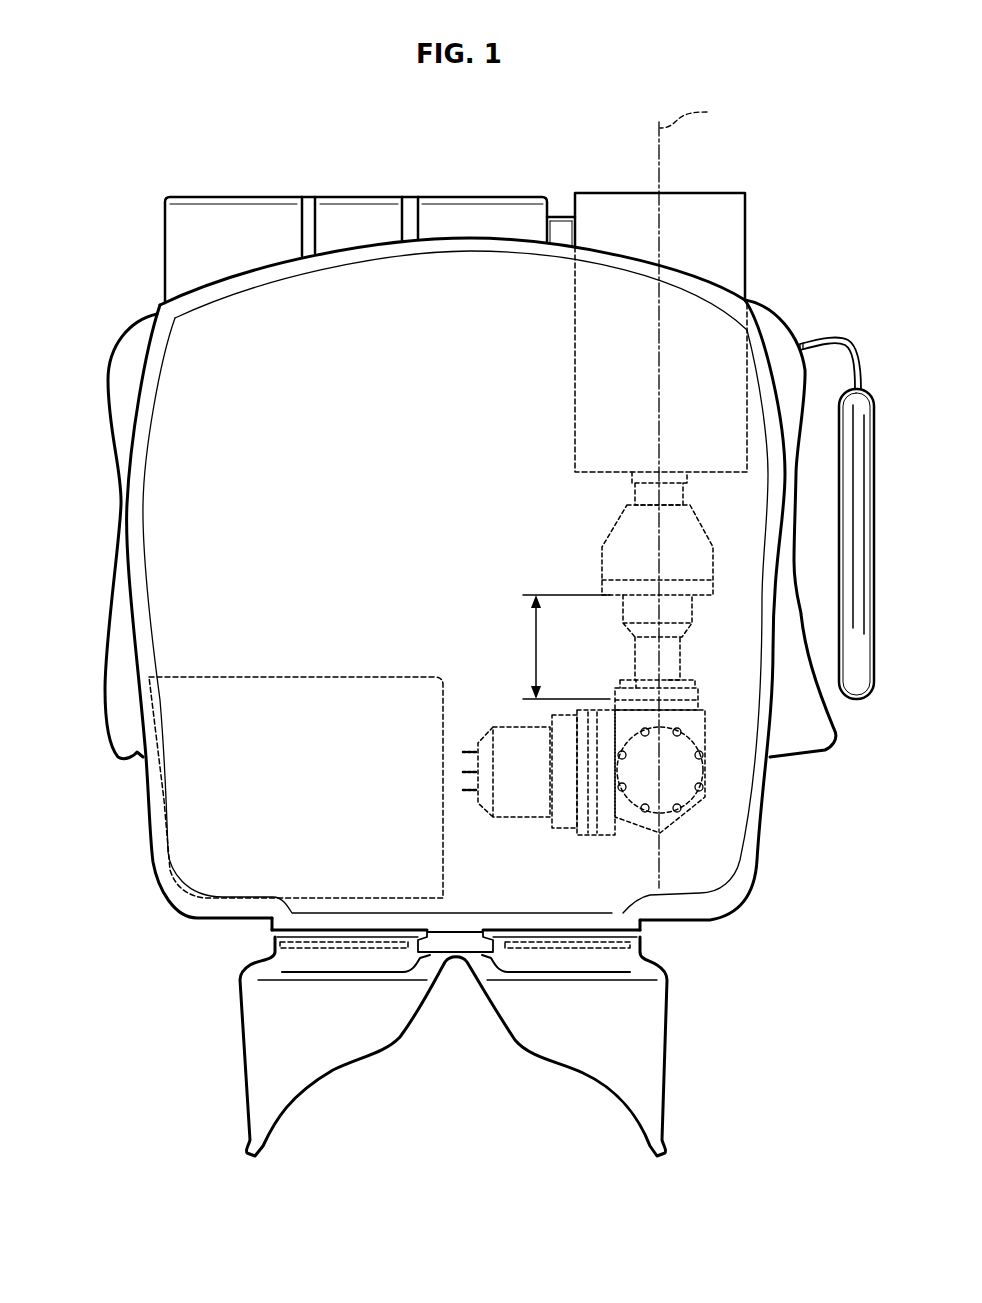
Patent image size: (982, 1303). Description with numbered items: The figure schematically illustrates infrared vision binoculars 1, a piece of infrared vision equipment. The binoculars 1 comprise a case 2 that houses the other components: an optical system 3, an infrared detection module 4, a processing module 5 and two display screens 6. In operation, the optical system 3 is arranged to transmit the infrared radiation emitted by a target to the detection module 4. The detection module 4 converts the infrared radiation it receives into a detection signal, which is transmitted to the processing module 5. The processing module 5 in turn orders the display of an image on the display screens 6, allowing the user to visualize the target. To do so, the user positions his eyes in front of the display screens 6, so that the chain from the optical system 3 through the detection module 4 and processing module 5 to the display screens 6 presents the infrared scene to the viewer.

The infrared vision binoculars 1 is at (80, 284).
The case 2 is at (147, 845).
The optical system 3 is at (745, 252).
The infrared detection module 4 is at (716, 770).
The processing module 5 is at (238, 676).
The display screens 6 is at (302, 948).